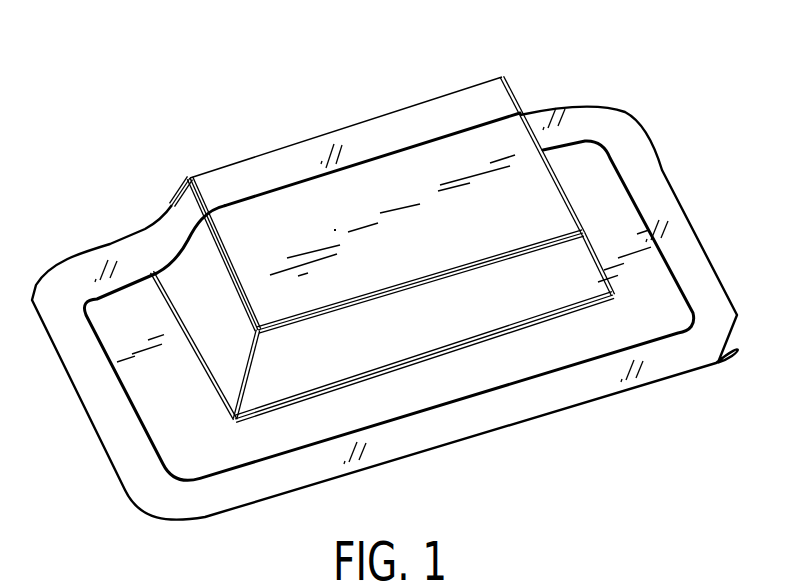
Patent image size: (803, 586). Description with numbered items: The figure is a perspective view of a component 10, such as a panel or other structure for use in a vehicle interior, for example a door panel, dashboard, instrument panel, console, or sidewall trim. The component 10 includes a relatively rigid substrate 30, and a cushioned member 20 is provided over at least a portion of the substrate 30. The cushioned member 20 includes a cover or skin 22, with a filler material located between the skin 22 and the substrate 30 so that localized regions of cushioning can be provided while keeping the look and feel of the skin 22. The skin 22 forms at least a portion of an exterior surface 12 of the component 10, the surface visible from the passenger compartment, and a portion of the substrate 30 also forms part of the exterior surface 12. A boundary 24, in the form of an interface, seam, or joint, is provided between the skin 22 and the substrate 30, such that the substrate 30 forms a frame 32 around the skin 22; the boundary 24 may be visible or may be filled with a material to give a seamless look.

The component 10 is at (215, 90).
The exterior surface 12 is at (380, 127).
The cushioned member 20 is at (452, 173).
The skin 22 is at (257, 197).
The boundary 24 is at (503, 383).
The substrate 30 is at (603, 120).
The frame 32 is at (110, 418).